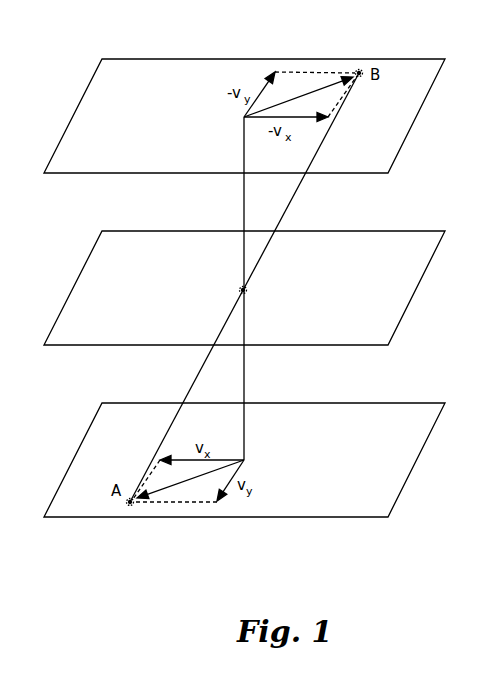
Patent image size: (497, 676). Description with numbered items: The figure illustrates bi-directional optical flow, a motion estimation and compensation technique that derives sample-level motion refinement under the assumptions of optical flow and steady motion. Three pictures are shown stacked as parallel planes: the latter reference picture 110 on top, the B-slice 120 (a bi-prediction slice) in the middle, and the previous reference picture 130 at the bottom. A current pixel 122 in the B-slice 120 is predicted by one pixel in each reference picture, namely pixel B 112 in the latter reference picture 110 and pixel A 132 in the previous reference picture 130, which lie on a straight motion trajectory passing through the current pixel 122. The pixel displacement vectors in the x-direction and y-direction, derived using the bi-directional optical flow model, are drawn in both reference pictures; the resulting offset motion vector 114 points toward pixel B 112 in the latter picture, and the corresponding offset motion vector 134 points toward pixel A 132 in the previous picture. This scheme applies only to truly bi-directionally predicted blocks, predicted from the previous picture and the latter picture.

The reference picture 1 110 is at (383, 59).
The pixel B 112 is at (358, 72).
The velocity vector to B 114 is at (307, 82).
The B-slice 120 is at (383, 231).
The current pixel 122 is at (247, 290).
The reference picture 0 130 is at (383, 403).
The pixel A 132 is at (128, 505).
The velocity vector to A 134 is at (188, 481).